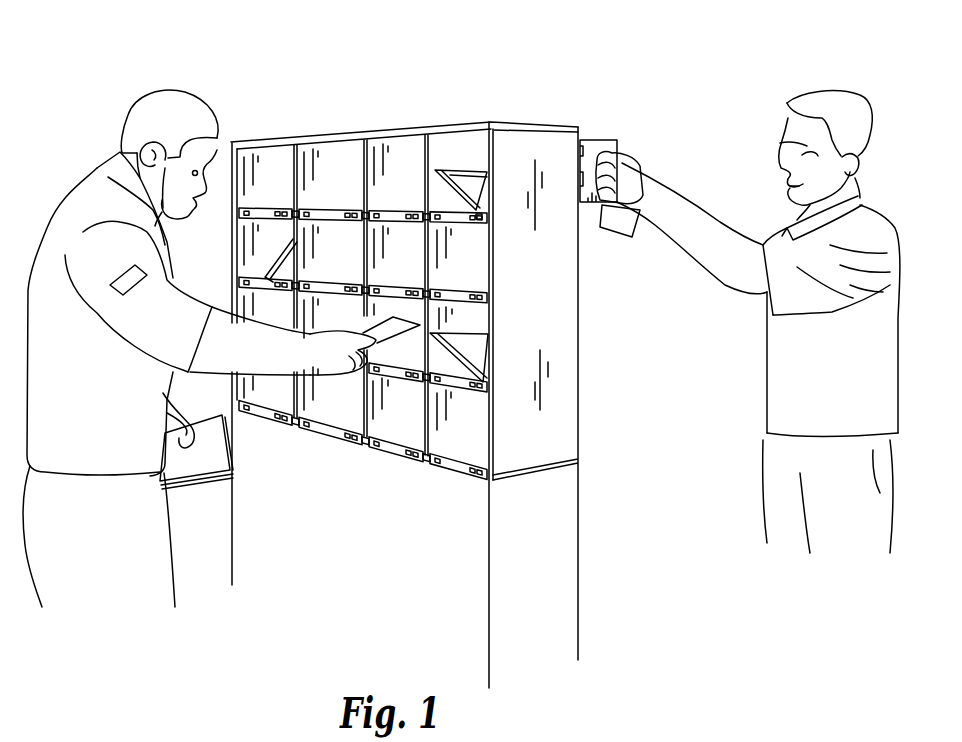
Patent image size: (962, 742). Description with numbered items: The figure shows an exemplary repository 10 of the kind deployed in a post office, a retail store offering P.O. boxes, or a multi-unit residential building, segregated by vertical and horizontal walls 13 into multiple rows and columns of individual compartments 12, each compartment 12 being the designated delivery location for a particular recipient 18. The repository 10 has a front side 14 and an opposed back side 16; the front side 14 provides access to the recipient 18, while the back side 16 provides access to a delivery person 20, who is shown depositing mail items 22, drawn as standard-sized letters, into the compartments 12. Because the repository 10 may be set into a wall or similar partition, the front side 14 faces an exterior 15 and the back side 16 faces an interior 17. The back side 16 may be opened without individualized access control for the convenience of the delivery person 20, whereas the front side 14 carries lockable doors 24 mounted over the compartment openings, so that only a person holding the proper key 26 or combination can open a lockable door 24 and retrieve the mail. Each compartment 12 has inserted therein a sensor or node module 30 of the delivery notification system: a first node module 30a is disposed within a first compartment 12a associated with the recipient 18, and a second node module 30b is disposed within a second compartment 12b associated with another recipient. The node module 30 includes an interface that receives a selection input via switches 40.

The repository 10 is at (413, 130).
The compartments 12 is at (380, 224).
The first compartment 12a is at (446, 160).
The second compartment 12b is at (339, 177).
The vertical and horizontal walls 13 is at (296, 173).
The front side 14 is at (592, 353).
The exterior 15 is at (696, 476).
The back side 16 is at (226, 225).
The interior 17 is at (236, 649).
The recipient 18 is at (880, 215).
The delivery person 20 is at (72, 192).
The mail items 22 is at (466, 178).
The lockable doors 24 is at (598, 138).
The key 26 is at (613, 226).
The node module 30 is at (405, 264).
The first node module 30a is at (452, 215).
The second node module 30b is at (392, 212).
The switches 40 is at (473, 223).